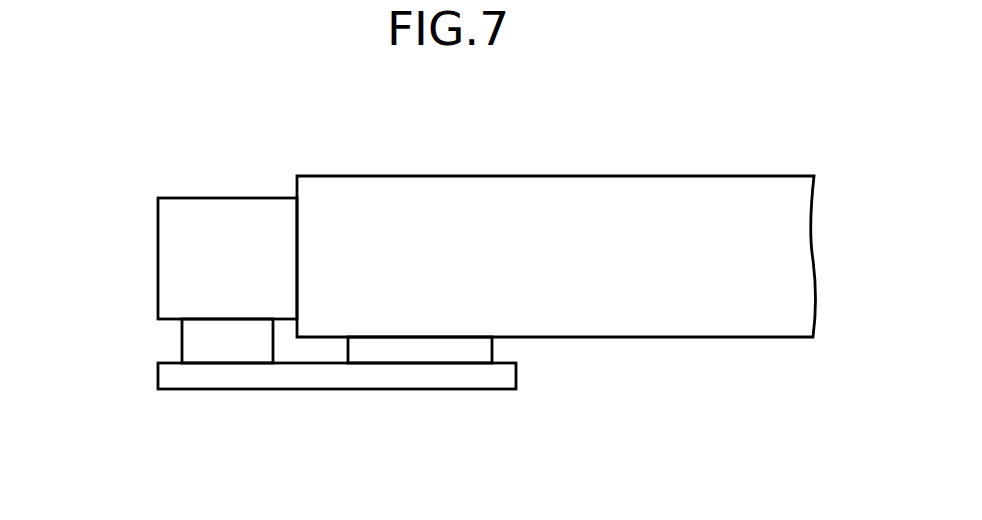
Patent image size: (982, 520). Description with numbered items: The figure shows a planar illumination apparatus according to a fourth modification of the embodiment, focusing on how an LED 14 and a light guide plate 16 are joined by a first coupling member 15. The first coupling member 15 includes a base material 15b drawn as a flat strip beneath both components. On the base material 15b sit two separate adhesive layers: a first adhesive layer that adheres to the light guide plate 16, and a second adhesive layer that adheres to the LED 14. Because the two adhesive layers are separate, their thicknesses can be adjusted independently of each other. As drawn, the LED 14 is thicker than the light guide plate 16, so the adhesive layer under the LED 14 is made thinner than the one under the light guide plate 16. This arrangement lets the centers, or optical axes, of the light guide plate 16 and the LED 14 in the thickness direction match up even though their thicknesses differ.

The LED 14 is at (222, 208).
The first coupling member 15 is at (140, 328).
The base material 15b is at (321, 377).
The light guide plate 16 is at (682, 337).